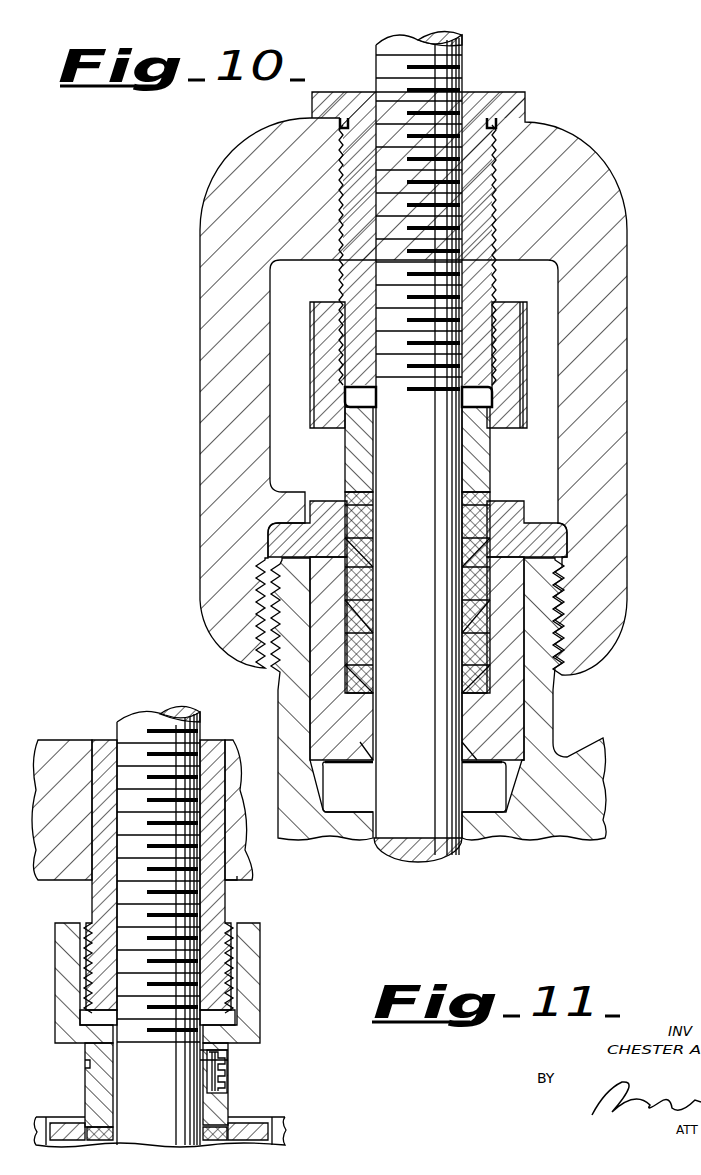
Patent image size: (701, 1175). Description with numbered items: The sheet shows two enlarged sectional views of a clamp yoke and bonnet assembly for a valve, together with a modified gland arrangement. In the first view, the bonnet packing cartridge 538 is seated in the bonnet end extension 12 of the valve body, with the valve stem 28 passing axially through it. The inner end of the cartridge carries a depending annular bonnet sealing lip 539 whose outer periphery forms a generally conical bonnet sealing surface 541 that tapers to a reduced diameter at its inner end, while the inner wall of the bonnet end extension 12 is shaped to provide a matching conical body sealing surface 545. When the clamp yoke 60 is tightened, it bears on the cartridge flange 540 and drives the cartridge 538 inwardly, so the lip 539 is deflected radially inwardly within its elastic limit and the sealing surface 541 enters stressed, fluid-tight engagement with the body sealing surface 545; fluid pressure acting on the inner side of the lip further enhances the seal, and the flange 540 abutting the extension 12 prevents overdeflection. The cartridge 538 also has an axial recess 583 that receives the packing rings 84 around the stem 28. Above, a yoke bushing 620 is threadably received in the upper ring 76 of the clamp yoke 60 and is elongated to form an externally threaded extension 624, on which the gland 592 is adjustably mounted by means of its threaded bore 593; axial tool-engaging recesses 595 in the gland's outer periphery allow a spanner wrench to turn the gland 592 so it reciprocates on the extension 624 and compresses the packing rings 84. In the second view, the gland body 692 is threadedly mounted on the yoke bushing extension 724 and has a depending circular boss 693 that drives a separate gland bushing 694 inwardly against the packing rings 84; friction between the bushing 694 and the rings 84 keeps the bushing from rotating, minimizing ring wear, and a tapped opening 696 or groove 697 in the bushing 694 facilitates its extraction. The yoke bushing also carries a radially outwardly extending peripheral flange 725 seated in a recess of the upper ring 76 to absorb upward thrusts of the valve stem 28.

In FIG. 10, the upper ring 76 is at (262, 162).
In FIG. 11, the upper ring 76 is at (65, 746).
In FIG. 10, the clamp yoke 60 is at (126, 198).
In FIG. 10, the valve stem 28 is at (418, 635).
In FIG. 11, the valve stem 28 is at (165, 1085).
In FIG. 10, the yoke bushing 620 is at (482, 152).
In FIG. 10, the externally threaded extension 624 is at (480, 312).
In FIG. 10, the gland 592 is at (513, 320).
In FIG. 10, the tool-engaging recesses 595 is at (525, 390).
In FIG. 10, the threaded bore 593 is at (380, 407).
In FIG. 10, the axial recess 583 is at (352, 512).
In FIG. 10, the packing rings 84 is at (370, 578).
In FIG. 11, the packing rings 84 is at (113, 1139).
In FIG. 10, the cartridge flange 540 is at (300, 547).
In FIG. 10, the bonnet packing cartridge 538 is at (330, 592).
In FIG. 10, the bonnet end extension 12 is at (286, 702).
In FIG. 10, the bonnet sealing lip 539 is at (324, 790).
In FIG. 10, the body sealing surface 545 is at (516, 786).
In FIG. 10, the bonnet sealing surface 541 is at (522, 784).
In FIG. 11, the peripheral flange 725 is at (232, 880).
In FIG. 11, the yoke bushing extension 724 is at (220, 943).
In FIG. 11, the gland body 692 is at (252, 977).
In FIG. 11, the depending circular boss 693 is at (228, 1051).
In FIG. 11, the tapped opening 696 is at (226, 1077).
In FIG. 11, the gland bushing 694 is at (226, 1108).
In FIG. 11, the groove 697 is at (88, 1066).